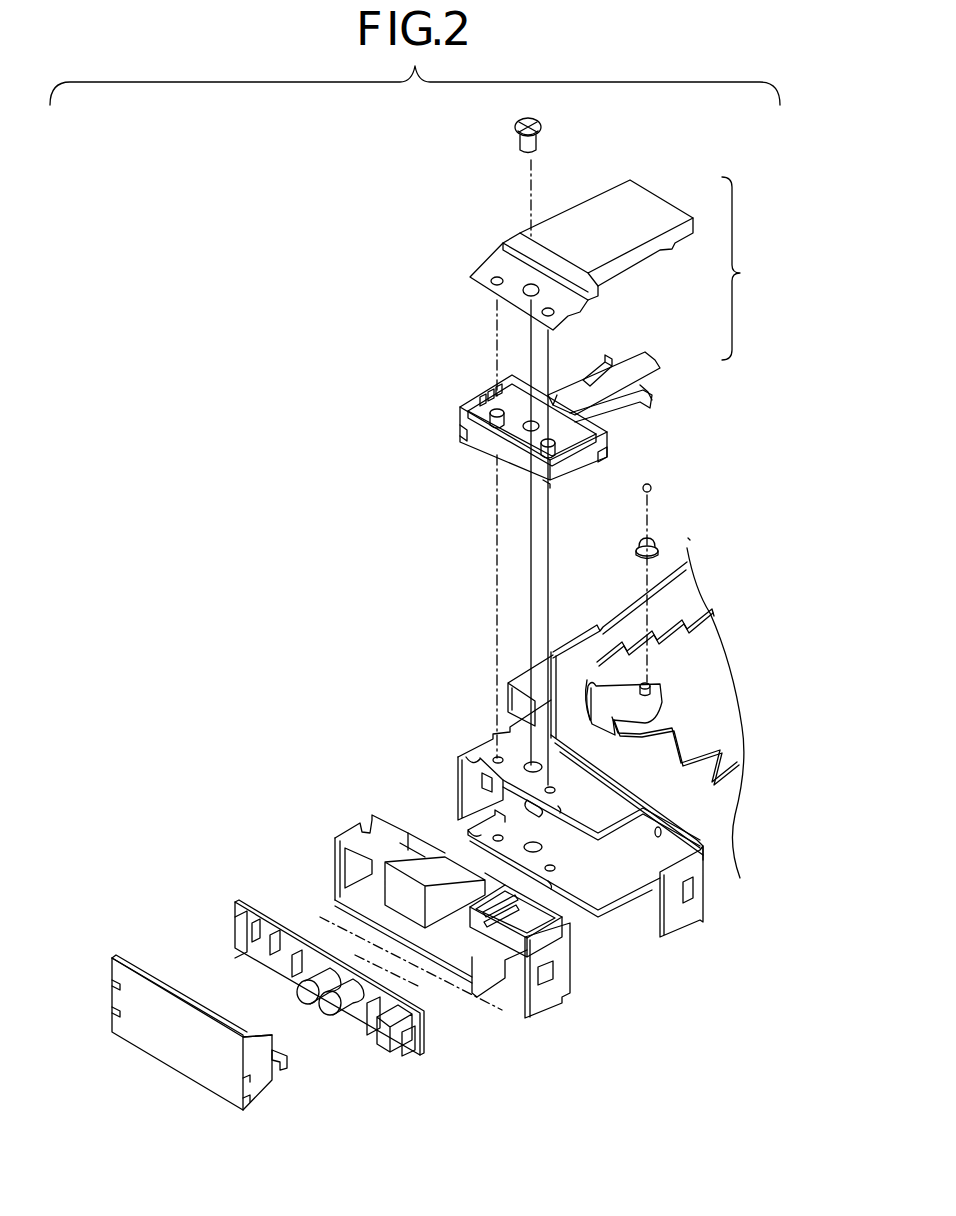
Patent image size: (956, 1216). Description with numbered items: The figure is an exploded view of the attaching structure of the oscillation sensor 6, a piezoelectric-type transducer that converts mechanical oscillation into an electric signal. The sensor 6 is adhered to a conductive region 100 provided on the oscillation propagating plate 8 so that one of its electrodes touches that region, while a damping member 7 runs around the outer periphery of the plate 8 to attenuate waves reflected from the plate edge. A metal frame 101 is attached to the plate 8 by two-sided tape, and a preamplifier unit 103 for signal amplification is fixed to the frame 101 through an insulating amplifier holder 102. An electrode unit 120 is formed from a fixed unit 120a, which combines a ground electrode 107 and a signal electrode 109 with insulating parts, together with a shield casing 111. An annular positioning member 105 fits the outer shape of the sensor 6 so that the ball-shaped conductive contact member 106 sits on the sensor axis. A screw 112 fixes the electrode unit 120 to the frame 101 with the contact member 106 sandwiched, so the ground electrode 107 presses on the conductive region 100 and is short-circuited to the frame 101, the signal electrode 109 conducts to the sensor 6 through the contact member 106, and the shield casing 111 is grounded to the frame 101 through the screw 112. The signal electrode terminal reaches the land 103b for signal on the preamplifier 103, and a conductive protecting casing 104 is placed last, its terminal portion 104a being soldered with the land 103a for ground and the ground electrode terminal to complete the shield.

The screw 112 is at (541, 148).
The shield casing 111 is at (676, 245).
The electrode unit 120 is at (756, 268).
The fixed unit 120a is at (476, 392).
The ground electrode 107 is at (586, 378).
The signal electrode 109 is at (640, 362).
The conductive contact member 106 is at (652, 488).
The annular positioning member 105 is at (636, 549).
The damping member 7 is at (685, 592).
The oscillation sensor 6 is at (662, 684).
The oscillation propagating plate 8 is at (727, 703).
The conductive region 100 is at (663, 703).
The metal frame 101 is at (688, 908).
The amplifier holder 102 is at (547, 1012).
The preamplifier unit 103 is at (422, 1028).
The land for ground 103a is at (370, 1018).
The land for signal 103b is at (238, 932).
The protecting casing 104 is at (257, 1083).
The terminal portion of protecting casing 104a is at (287, 1068).